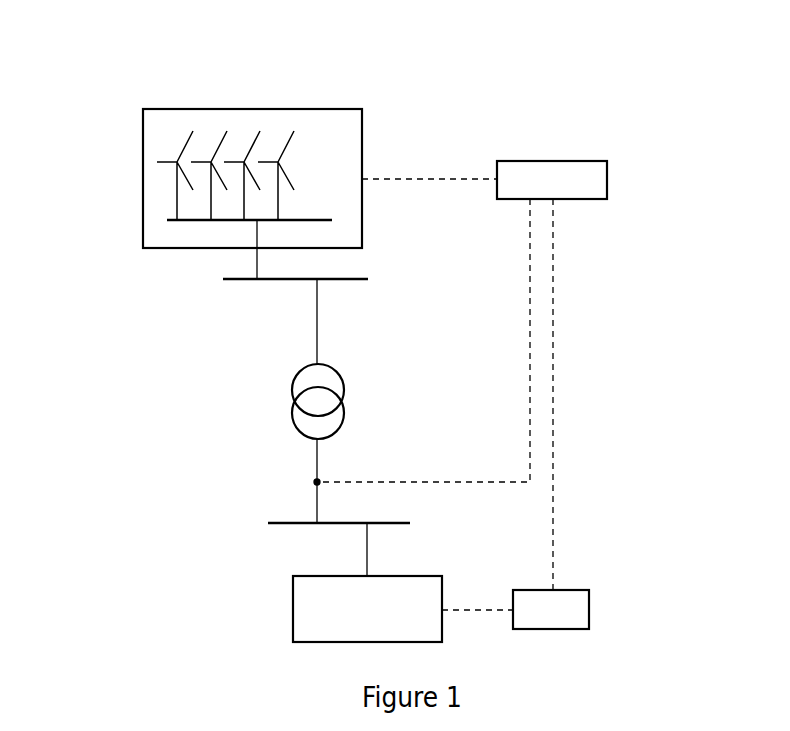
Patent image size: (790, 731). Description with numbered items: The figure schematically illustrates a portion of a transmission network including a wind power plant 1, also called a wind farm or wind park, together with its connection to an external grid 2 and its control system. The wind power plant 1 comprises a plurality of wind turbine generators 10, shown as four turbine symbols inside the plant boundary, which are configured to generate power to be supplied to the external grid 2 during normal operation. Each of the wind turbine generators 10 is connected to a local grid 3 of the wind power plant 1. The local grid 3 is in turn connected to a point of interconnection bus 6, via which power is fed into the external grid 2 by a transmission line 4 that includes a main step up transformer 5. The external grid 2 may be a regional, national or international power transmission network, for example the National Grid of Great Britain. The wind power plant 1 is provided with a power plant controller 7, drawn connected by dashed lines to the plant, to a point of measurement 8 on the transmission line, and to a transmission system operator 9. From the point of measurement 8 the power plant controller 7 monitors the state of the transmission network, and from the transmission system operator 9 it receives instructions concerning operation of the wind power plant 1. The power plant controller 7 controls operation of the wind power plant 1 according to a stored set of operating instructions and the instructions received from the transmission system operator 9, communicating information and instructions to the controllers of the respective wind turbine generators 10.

The wind power plant 1 is at (130, 90).
The external grid 2 is at (290, 627).
The local grid 3 is at (188, 222).
The transmission line 4 is at (315, 323).
The main step up transformer 5 is at (288, 424).
The point of interconnection bus 6 is at (277, 526).
The power plant controller 7 is at (610, 180).
The point of measurement 8 is at (307, 482).
The transmission system operator 9 is at (590, 612).
The wind turbine generators 10 is at (279, 96).